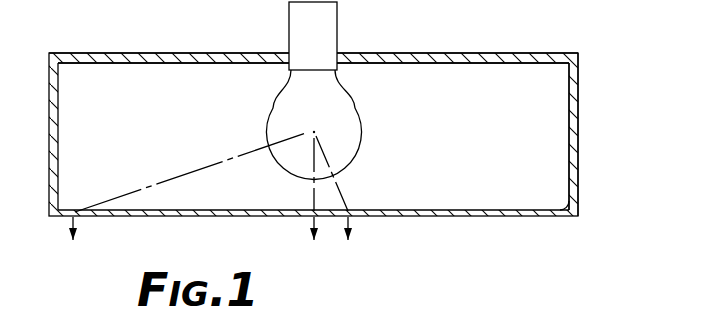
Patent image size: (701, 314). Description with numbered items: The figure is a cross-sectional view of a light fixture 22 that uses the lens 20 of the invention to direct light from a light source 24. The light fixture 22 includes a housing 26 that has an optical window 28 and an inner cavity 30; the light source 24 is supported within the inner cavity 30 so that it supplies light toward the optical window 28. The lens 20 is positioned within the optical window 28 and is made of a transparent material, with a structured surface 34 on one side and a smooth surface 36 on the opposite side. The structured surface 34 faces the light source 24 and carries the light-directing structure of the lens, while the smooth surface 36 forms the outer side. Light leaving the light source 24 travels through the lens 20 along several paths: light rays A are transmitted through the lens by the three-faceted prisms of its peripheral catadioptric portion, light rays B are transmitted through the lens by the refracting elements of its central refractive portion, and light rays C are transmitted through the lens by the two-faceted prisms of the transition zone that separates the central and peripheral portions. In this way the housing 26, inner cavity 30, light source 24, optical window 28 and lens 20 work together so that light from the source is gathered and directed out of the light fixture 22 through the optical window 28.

The lens 20 is at (346, 137).
The light fixture 22 is at (590, 187).
The light source 24 is at (358, 126).
The housing 26 is at (531, 54).
The optical window 28 is at (565, 208).
The inner cavity 30 is at (143, 88).
The structured surface 34 is at (494, 208).
The smooth surface 36 is at (120, 218).
The light rays A is at (202, 168).
The light rays B is at (312, 200).
The light rays C is at (350, 197).